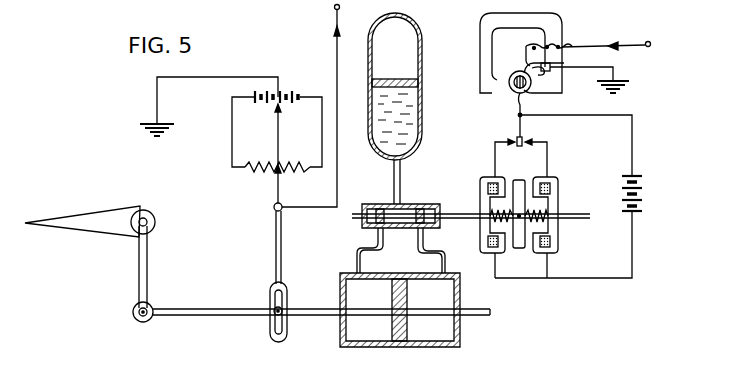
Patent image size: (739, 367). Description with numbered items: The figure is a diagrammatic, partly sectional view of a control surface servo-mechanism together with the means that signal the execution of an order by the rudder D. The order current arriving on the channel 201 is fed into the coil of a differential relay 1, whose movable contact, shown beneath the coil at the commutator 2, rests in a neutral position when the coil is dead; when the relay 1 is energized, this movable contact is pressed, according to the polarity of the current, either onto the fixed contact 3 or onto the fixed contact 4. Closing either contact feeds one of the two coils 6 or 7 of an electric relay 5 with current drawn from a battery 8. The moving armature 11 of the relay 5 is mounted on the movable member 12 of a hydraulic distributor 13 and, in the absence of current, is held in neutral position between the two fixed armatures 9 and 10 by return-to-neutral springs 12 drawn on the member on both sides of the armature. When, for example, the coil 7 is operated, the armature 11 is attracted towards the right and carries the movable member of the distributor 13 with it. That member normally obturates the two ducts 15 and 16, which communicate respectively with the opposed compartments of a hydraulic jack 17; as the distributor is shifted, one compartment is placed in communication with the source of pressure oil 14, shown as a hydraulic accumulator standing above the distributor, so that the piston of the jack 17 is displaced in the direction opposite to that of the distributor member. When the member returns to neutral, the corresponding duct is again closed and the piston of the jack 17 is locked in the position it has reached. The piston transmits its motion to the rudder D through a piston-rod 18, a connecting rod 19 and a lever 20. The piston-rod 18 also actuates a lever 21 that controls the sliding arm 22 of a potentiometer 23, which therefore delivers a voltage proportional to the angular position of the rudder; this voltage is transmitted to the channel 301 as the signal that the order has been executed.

The differential relay 1 is at (500, 57).
The commutator 2 is at (513, 85).
The fixed contact 3 is at (511, 139).
The fixed contact 4 is at (533, 134).
The electric relay 5 is at (565, 187).
The coil 6 is at (496, 252).
The coil 7 is at (547, 252).
The battery 8 is at (636, 199).
The fixed armature 9 is at (482, 232).
The fixed armature 10 is at (551, 232).
The moving armature 11 is at (519, 180).
The movable member and return-to-neutral springs 12 is at (488, 205).
The hydraulic distributor 13 is at (410, 205).
The source of pressure oil 14 is at (418, 114).
The duct 15 is at (426, 250).
The duct 16 is at (370, 251).
The hydraulic jack 17 is at (456, 332).
The piston-rod 18 is at (306, 312).
The connecting rod 19 is at (200, 309).
The lever 20 is at (146, 288).
The lever 21 is at (275, 251).
The sliding arm 22 is at (265, 153).
The potentiometer 23 is at (278, 167).
The channel 201 is at (636, 48).
The channel 301 is at (333, 21).
The rudder D is at (76, 220).